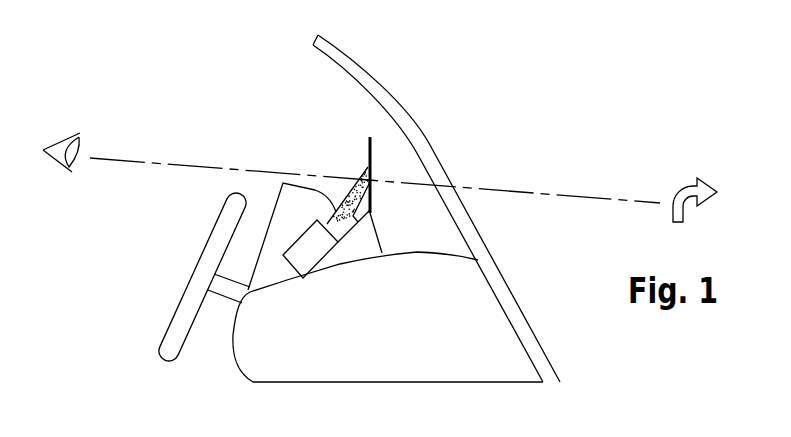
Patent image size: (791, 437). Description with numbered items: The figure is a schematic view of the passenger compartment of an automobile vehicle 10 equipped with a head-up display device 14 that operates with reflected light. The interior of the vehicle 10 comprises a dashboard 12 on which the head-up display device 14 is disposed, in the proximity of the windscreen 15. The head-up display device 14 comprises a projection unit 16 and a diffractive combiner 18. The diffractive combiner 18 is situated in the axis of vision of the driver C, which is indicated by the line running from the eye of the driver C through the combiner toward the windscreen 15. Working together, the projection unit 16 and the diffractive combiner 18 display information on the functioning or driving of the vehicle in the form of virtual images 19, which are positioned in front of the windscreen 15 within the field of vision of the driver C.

The automobile vehicle 10 is at (383, 218).
The dashboard 12 is at (230, 373).
The head-up display device 14 is at (269, 154).
The windscreen 15 is at (411, 138).
The projection unit 16 is at (308, 242).
The diffractive combiner 18 is at (368, 148).
The virtual images 19 is at (682, 170).
The driver C is at (62, 124).